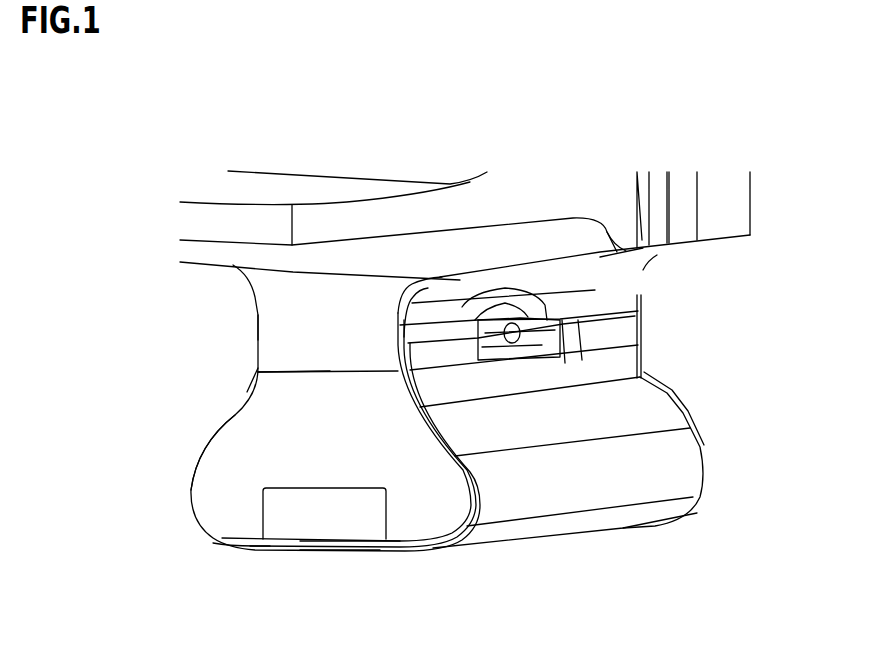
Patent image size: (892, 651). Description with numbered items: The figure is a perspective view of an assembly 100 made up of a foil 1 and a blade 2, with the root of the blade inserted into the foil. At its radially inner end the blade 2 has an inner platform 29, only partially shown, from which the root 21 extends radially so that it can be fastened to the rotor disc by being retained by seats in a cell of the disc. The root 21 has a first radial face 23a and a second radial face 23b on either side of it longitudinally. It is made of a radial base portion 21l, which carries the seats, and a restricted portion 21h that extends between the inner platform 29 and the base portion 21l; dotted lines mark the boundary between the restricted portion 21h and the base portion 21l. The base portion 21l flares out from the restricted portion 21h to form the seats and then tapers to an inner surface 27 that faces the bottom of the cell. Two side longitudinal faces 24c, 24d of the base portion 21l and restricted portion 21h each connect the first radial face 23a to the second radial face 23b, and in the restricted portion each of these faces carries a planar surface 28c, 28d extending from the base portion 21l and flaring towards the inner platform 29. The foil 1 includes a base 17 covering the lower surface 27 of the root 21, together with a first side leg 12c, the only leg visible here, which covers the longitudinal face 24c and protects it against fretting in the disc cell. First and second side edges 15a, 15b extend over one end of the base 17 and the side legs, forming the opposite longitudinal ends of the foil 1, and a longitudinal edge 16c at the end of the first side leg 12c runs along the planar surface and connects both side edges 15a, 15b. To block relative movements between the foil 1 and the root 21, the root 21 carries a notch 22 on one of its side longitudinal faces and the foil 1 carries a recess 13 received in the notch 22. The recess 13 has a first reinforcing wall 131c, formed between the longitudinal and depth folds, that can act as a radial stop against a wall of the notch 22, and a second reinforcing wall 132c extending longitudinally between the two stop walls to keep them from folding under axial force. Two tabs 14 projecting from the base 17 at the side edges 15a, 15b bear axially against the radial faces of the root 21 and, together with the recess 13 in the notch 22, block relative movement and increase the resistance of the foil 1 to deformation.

The assembly 100 is at (128, 196).
The inner platform 29 is at (367, 200).
The planar surface 28c is at (440, 337).
The second reinforcing wall 132c is at (510, 345).
The longitudinal edge 16c is at (445, 337).
The first reinforcing wall 131c is at (428, 288).
The side longitudinal face 24c is at (620, 305).
The notch 22 is at (550, 311).
The recess 13 is at (542, 338).
The second radial face 23b is at (667, 393).
The second side edge 15b is at (677, 410).
The foil 1 is at (610, 423).
The first side leg 12c is at (540, 447).
The blade 2 is at (217, 468).
The first side edge 15a is at (462, 452).
The base 17 is at (417, 553).
The tab 14 is at (317, 523).
The inner surface 27 is at (258, 550).
The first radial face 23a is at (277, 437).
The side longitudinal face 24d is at (247, 392).
The planar surface 28d is at (253, 333).
The root 21 is at (280, 365).
The restricted portion 21h is at (295, 346).
The base portion 21l is at (340, 490).